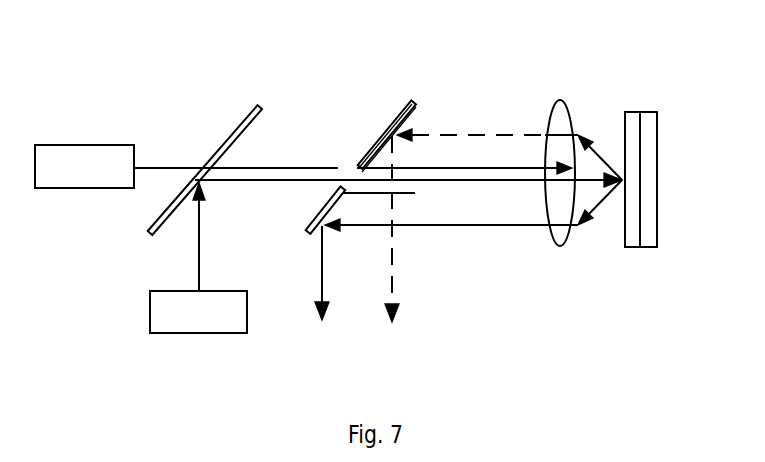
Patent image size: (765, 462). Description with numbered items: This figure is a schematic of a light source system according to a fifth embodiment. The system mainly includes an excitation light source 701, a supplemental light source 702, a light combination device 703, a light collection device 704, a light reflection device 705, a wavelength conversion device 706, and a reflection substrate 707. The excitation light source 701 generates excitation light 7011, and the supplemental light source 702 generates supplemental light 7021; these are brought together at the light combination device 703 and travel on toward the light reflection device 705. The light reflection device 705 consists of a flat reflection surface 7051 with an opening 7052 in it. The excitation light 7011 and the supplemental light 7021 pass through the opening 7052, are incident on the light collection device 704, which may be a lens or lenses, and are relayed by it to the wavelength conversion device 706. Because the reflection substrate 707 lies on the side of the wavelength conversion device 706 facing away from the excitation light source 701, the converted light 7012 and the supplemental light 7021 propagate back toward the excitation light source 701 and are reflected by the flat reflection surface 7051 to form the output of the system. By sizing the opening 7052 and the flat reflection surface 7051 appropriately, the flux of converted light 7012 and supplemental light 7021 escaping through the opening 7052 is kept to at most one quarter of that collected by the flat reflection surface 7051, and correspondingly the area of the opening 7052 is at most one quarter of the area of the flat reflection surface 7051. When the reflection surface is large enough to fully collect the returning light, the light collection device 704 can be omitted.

The excitation light source 701 is at (87, 145).
The excitation light 7011 is at (147, 167).
The supplemental light source 702 is at (195, 333).
The supplemental light 7021 is at (199, 255).
The light combination device 703 is at (258, 107).
The light collection device 704 is at (563, 104).
The light reflection device 705 is at (418, 98).
The flat reflection surface 7051 is at (406, 127).
The opening 7052 is at (362, 165).
The converted light 7012 is at (590, 227).
The wavelength conversion device 706 is at (630, 232).
The reflection substrate 707 is at (657, 243).